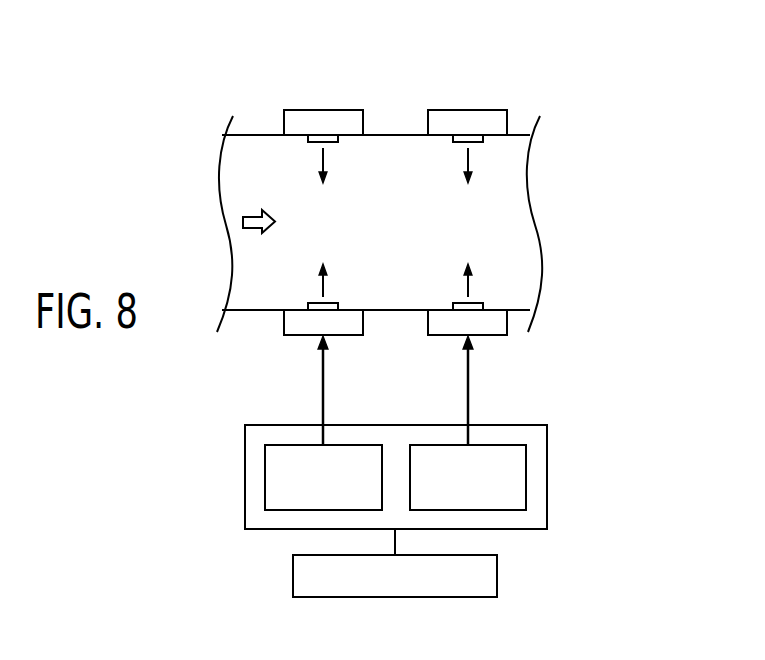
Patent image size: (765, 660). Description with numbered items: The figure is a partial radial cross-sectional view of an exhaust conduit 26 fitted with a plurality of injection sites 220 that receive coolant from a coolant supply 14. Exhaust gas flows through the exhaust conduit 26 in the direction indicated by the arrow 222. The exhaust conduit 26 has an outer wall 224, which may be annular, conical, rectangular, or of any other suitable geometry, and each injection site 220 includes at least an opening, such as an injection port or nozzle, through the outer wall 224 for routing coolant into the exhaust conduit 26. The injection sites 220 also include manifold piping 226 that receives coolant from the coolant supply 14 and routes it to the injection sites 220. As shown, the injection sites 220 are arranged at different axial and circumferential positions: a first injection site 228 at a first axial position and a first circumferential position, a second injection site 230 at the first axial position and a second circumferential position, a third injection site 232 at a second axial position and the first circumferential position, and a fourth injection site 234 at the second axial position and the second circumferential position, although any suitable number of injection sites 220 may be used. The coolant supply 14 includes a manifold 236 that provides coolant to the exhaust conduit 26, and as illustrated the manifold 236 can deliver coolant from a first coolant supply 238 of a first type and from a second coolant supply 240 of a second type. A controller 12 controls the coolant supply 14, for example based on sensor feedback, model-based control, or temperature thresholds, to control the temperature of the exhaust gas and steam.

The controller 12 is at (498, 583).
The coolant supply 14 is at (265, 458).
The exhaust conduit 26 is at (523, 227).
The injection sites 220 is at (282, 122).
The arrow 222 is at (255, 210).
The outer wall 224 is at (518, 134).
The manifold piping 226 is at (343, 110).
The first injection site 228 is at (318, 106).
The second injection site 230 is at (460, 106).
The third injection site 232 is at (345, 340).
The fourth injection site 234 is at (493, 340).
The manifold 236 is at (548, 448).
The first coolant supply 238 is at (280, 512).
The second coolant supply 240 is at (513, 512).